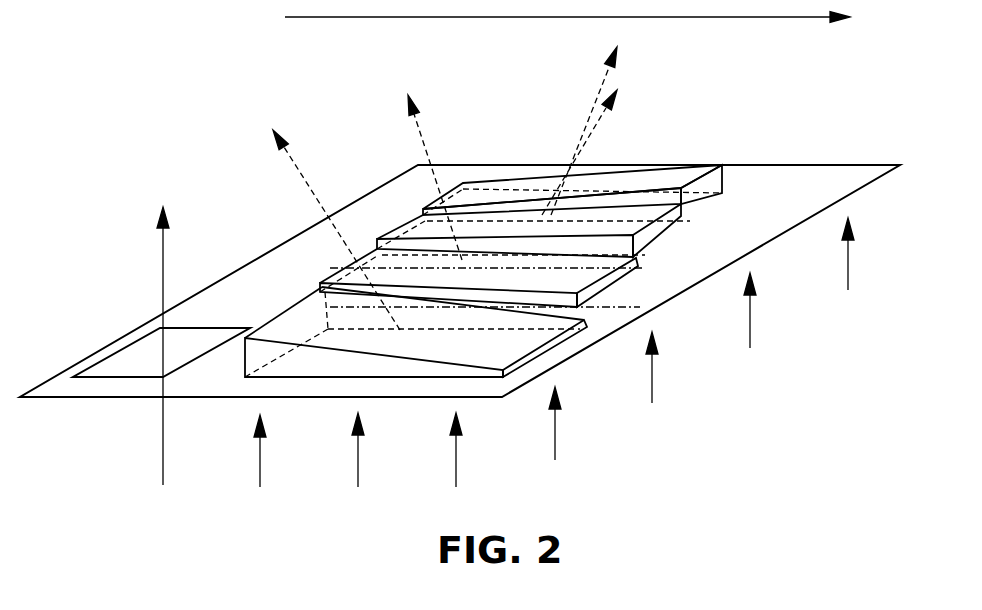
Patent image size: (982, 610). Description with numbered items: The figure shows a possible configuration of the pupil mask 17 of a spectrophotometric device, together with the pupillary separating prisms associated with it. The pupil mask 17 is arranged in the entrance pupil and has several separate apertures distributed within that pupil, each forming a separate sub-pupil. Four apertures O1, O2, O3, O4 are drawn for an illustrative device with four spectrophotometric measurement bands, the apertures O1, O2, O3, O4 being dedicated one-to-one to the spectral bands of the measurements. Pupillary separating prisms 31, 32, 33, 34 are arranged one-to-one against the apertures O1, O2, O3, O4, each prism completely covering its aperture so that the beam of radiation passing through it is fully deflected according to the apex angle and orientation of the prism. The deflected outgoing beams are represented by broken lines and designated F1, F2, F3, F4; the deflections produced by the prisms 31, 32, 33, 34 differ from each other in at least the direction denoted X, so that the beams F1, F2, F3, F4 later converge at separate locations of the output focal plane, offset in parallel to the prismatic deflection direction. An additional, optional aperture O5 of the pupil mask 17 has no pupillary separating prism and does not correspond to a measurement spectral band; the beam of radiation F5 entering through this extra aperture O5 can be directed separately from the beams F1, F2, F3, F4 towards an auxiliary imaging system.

The pupil mask 17 is at (97, 398).
The pupillary separating prism 31 is at (627, 234).
The pupillary separating prism 32 is at (554, 278).
The pupillary separating prism 33 is at (447, 241).
The pupillary separating prism 34 is at (412, 297).
The aperture O1 is at (661, 199).
The aperture O2 is at (611, 242).
The aperture O3 is at (575, 289).
The aperture O4 is at (501, 356).
The additional aperture O5 is at (173, 369).
The deflected beam of radiation F1 is at (588, 108).
The deflected beam of radiation F2 is at (595, 131).
The deflected beam of radiation F3 is at (430, 147).
The deflected beam of radiation F4 is at (312, 182).
The beam of radiation F5 is at (160, 268).
The direction X is at (580, 19).